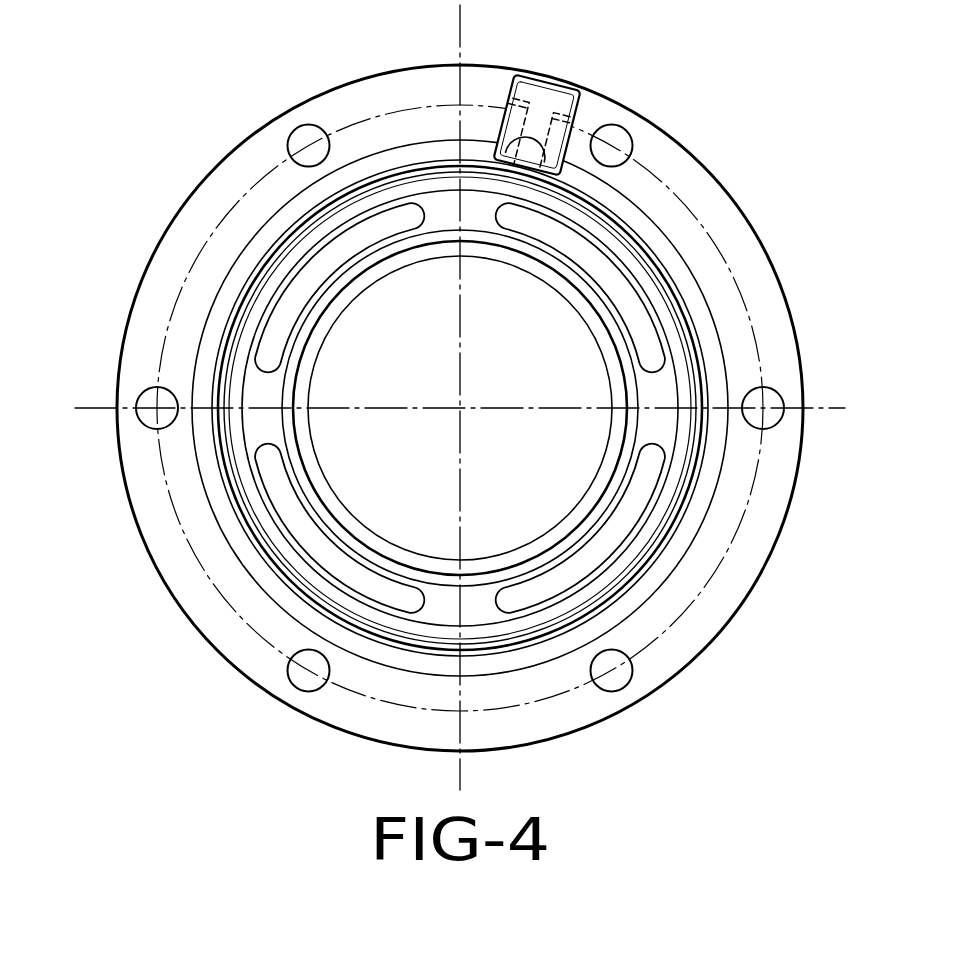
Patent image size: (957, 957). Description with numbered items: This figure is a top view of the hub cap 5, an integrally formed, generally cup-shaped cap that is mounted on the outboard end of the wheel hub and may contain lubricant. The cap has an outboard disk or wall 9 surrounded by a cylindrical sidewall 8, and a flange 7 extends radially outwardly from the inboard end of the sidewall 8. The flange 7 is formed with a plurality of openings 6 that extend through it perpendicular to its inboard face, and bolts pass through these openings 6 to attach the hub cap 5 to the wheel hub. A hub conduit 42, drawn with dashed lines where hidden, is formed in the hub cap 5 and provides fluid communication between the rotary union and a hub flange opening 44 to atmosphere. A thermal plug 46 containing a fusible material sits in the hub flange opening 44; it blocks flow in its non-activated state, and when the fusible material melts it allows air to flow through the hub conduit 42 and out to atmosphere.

The hub cap 5 is at (716, 644).
The openings 6 is at (292, 128).
The flange 7 is at (752, 222).
The cylindrical sidewall 8 is at (267, 262).
The outboard disk or wall 9 is at (577, 352).
The hub conduit 42 is at (546, 142).
The hub flange opening 44 is at (536, 73).
The thermal plug 46 is at (548, 75).